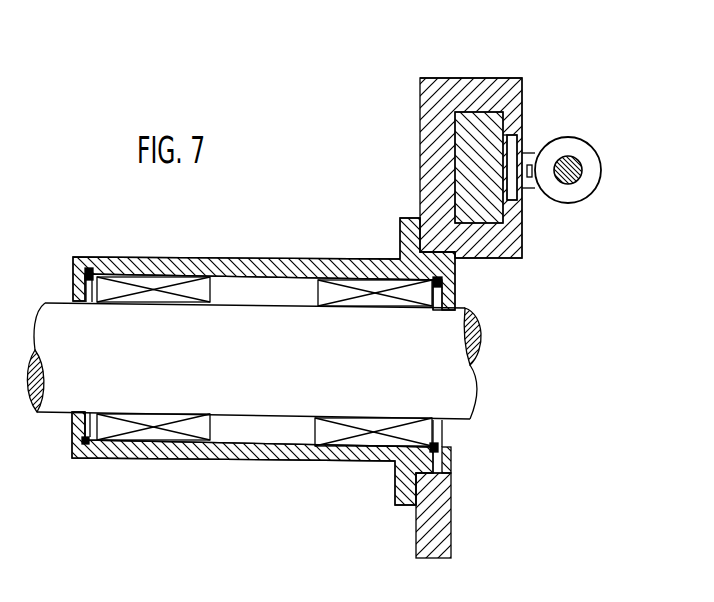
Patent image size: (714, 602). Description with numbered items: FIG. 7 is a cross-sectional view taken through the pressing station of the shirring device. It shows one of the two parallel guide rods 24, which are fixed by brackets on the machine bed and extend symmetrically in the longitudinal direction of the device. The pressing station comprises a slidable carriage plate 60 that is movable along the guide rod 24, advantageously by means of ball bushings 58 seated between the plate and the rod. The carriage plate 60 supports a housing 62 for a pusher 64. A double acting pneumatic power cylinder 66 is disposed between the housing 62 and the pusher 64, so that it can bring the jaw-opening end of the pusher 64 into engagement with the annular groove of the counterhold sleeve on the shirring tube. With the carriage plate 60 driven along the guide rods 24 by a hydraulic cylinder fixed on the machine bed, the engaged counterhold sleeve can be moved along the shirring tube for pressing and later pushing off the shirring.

The guide rod 24 is at (445, 338).
The ball bushing 58 is at (410, 433).
The carriage plate 60 is at (442, 504).
The housing 62 is at (535, 140).
The pusher 64 is at (482, 122).
The double acting pneumatic power cylinder 66 is at (588, 170).